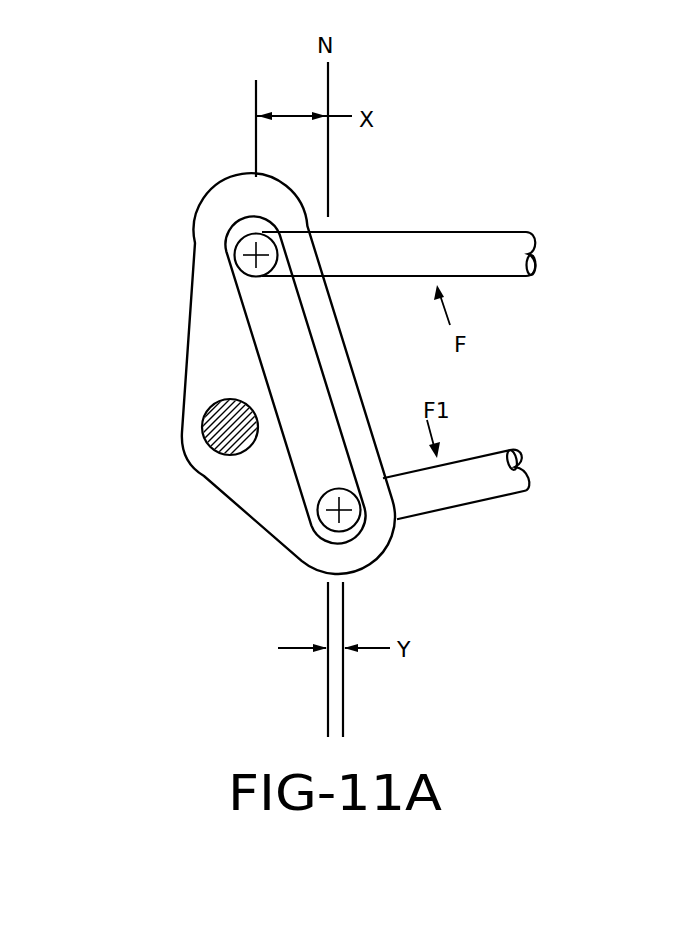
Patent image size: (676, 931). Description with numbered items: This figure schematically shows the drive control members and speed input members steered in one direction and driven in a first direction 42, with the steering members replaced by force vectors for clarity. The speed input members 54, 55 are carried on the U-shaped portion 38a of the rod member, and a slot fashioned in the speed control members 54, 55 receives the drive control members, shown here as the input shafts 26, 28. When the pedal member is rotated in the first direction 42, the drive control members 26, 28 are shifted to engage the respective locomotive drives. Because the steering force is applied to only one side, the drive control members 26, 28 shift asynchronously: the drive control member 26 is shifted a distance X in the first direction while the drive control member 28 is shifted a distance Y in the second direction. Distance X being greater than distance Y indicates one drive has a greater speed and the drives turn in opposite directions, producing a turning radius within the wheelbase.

The first direction 42 is at (188, 72).
The input shaft 26 is at (473, 240).
The input shaft 28 is at (433, 500).
The U-shaped portion 38a is at (203, 441).
The speed input member 54 is at (241, 373).
The speed input member 55 is at (223, 337).